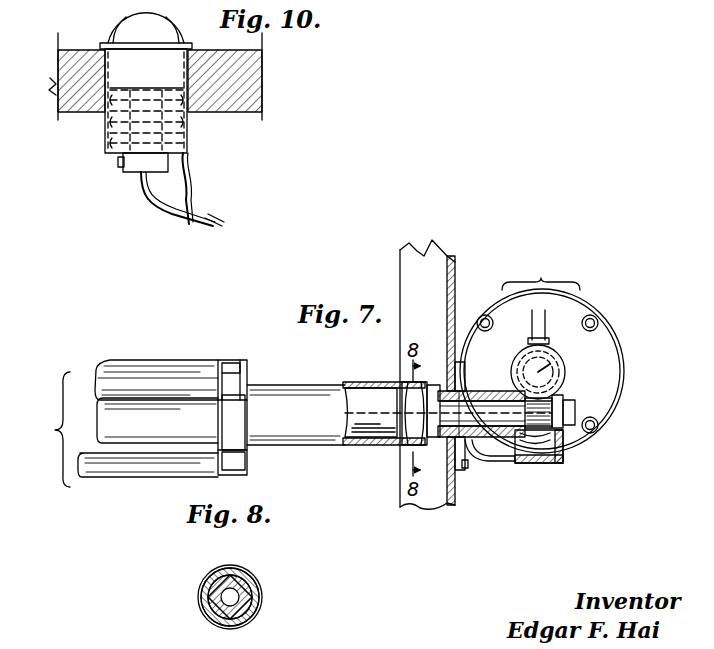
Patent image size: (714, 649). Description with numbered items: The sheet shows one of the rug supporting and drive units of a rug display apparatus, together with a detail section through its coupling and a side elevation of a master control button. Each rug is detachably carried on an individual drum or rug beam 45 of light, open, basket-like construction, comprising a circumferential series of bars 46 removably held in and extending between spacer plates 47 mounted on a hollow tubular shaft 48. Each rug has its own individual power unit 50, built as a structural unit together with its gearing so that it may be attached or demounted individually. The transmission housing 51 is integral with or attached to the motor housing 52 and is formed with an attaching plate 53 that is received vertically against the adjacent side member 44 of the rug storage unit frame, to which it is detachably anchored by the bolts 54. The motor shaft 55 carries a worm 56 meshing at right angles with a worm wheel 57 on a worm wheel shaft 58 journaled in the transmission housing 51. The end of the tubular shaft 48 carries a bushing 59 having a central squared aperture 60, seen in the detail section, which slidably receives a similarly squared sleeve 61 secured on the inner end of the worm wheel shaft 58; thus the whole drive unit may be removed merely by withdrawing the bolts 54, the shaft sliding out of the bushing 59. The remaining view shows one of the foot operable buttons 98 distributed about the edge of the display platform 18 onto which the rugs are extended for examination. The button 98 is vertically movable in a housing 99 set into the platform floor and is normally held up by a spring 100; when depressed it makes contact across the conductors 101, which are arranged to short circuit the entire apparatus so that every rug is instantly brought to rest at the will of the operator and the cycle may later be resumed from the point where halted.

In FIG. 10, the display platform 18 is at (248, 88).
In FIG. 10, the foot operable button 98 is at (137, 31).
In FIG. 10, the housing 99 is at (120, 68).
In FIG. 10, the spring 100 is at (110, 142).
In FIG. 10, the conductors 101 is at (146, 189).
In FIG. 7, the side member 44 is at (453, 290).
In FIG. 7, the rug beam 45 is at (54, 429).
In FIG. 7, the bars 46 is at (100, 378).
In FIG. 7, the spacer plates 47 is at (232, 367).
In FIG. 7, the tubular shaft 48 is at (291, 395).
In FIG. 8, the tubular shaft 48 is at (207, 616).
In FIG. 7, the power unit 50 is at (541, 272).
In FIG. 7, the transmission housing 51 is at (524, 463).
In FIG. 7, the motor housing 52 is at (612, 371).
In FIG. 7, the attaching plate 53 is at (461, 474).
In FIG. 7, the bolts 54 is at (468, 375).
In FIG. 7, the motor shaft 55 is at (556, 364).
In FIG. 7, the worm 56 is at (556, 374).
In FIG. 7, the worm wheel 57 is at (541, 443).
In FIG. 7, the worm wheel shaft 58 is at (397, 432).
In FIG. 8, the worm wheel shaft 58 is at (240, 586).
In FIG. 7, the bushing 59 is at (383, 384).
In FIG. 8, the bushing 59 is at (250, 612).
In FIG. 7, the squared aperture 60 is at (400, 395).
In FIG. 8, the squared aperture 60 is at (256, 599).
In FIG. 7, the squared sleeve 61 is at (401, 444).
In FIG. 8, the squared sleeve 61 is at (210, 593).